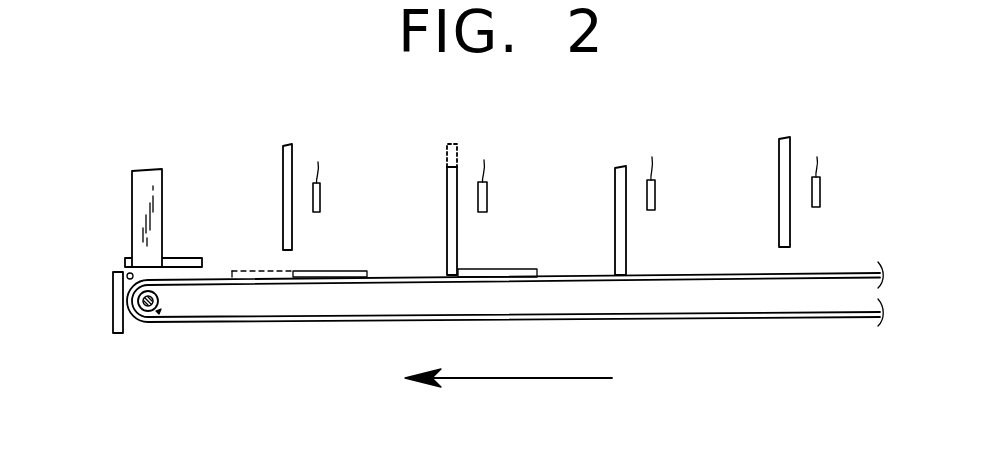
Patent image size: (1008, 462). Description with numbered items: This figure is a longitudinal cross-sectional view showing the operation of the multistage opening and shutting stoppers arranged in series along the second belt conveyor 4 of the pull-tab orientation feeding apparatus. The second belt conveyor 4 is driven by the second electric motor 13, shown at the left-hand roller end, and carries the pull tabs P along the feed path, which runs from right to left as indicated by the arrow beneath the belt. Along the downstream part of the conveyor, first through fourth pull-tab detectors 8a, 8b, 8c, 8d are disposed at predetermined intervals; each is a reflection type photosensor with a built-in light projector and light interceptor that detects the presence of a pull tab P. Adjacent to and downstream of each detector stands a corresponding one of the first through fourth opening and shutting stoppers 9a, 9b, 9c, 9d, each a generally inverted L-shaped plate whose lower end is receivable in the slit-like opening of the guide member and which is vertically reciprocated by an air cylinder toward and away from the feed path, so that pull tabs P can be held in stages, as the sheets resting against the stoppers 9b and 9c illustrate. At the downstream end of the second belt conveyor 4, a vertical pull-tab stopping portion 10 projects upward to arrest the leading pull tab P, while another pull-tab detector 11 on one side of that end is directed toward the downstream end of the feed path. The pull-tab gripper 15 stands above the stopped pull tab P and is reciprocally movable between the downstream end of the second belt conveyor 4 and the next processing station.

The second belt conveyor 4 is at (835, 272).
The first pull-tab detector 8a is at (320, 195).
The second pull-tab detector 8b is at (487, 195).
The third pull-tab detector 8c is at (655, 190).
The fourth pull-tab detector 8d is at (820, 192).
The first opening and shutting stopper 9a is at (283, 198).
The second opening and shutting stopper 9b is at (447, 215).
The third opening and shutting stopper 9c is at (615, 215).
The fourth opening and shutting stopper 9d is at (779, 188).
The pull-tab stopping portion 10 is at (117, 334).
The pull-tab detector 11 is at (114, 277).
The second electric motor 13 is at (157, 320).
The pull-tab gripper 15 is at (132, 212).
The pull tab P is at (187, 258).